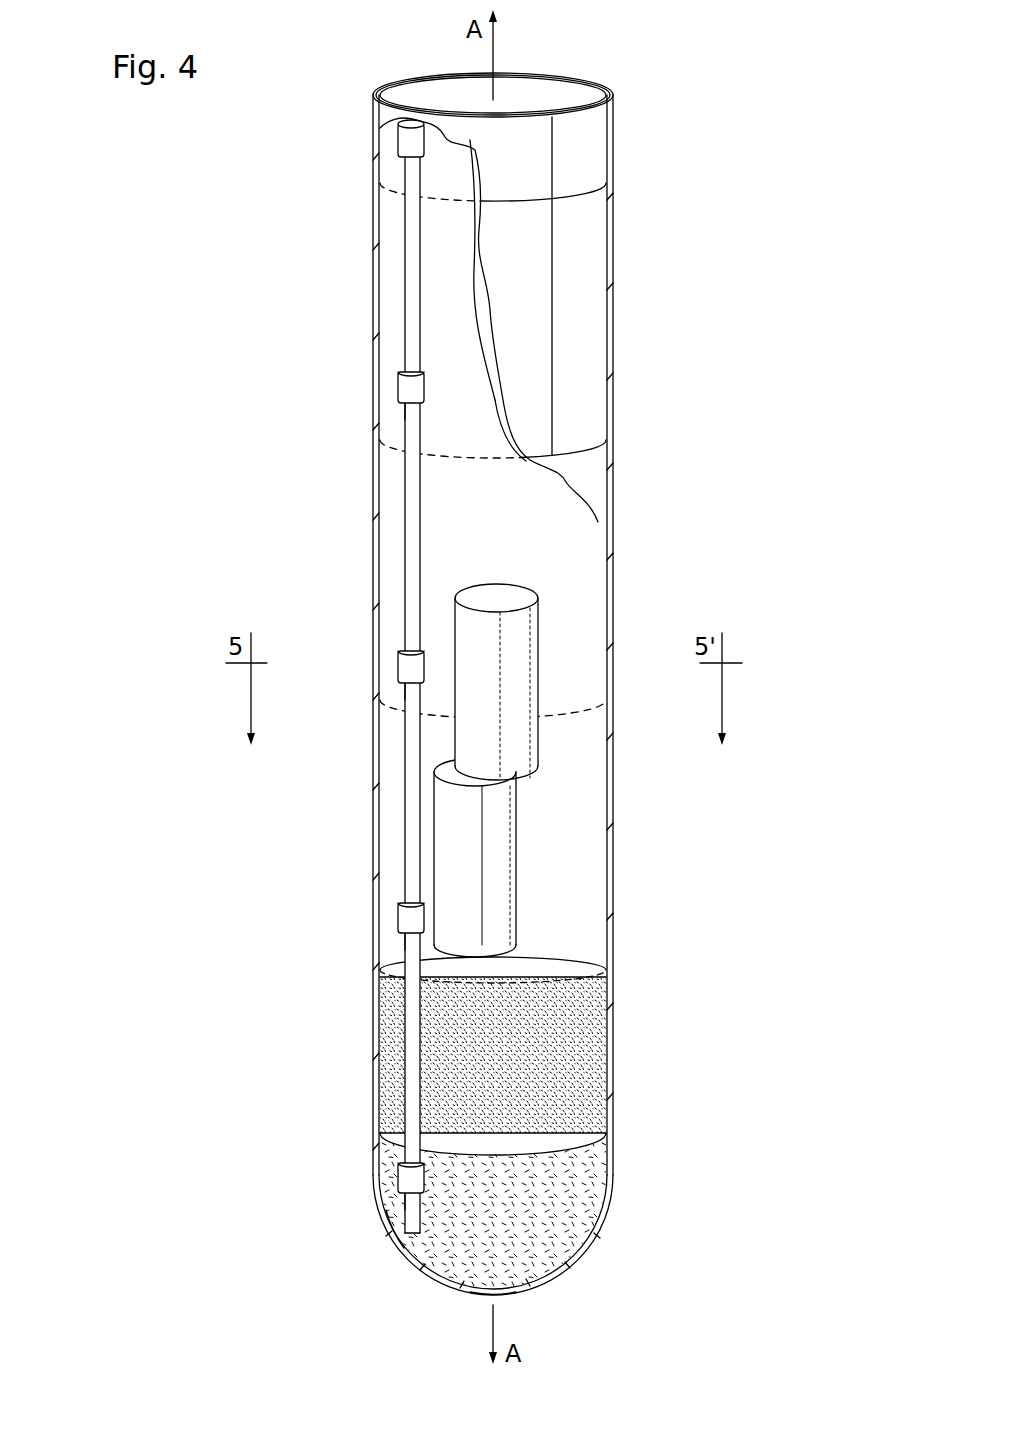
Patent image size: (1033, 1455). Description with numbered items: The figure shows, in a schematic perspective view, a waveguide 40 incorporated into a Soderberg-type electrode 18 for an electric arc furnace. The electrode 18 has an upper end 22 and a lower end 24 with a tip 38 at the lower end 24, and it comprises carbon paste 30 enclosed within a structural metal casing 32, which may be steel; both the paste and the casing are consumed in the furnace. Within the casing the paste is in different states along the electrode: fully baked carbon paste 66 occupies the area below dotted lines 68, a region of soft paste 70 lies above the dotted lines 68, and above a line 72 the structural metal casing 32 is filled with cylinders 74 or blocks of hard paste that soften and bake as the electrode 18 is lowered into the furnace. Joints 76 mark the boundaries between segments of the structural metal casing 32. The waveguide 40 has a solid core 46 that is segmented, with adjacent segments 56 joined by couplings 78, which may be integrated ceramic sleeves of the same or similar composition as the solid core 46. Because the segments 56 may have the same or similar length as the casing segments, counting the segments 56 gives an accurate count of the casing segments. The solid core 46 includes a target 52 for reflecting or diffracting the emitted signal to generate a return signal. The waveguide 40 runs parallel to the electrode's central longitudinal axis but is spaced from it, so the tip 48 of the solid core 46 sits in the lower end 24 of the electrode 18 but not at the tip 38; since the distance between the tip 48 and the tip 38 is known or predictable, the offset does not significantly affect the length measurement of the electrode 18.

The electrode 18 is at (615, 385).
The upper end 22 is at (600, 78).
The lower end 24 is at (403, 1245).
The carbon paste 30 is at (590, 1010).
The structural metal casing 32 is at (613, 868).
The tip 38 is at (500, 1300).
The waveguide 40 is at (420, 277).
The solid core 46 is at (616, 346).
The tip 48 is at (418, 1240).
The target 52 is at (405, 404).
The segments 56 is at (405, 305).
The fully baked carbon paste 66 is at (540, 1242).
The dotted lines 68 is at (592, 1190).
The soft paste 70 is at (562, 1052).
The line 72 is at (548, 962).
The cylinders of hard paste 74 is at (515, 855).
The joints 76 is at (400, 198).
The couplings 78 is at (404, 146).